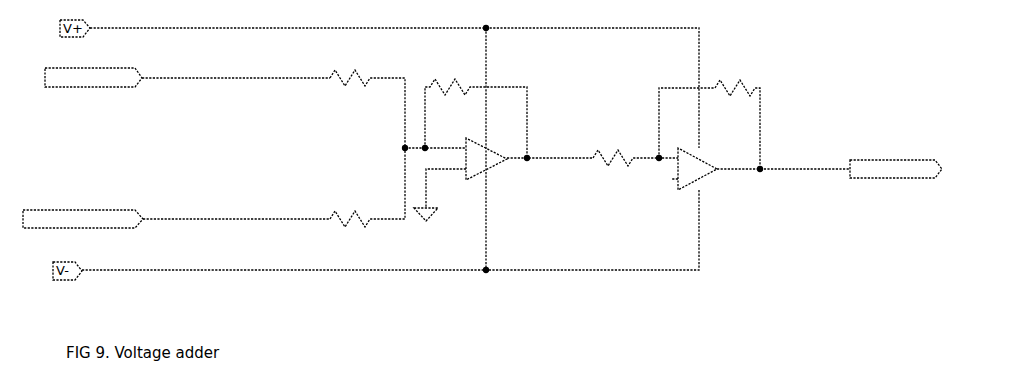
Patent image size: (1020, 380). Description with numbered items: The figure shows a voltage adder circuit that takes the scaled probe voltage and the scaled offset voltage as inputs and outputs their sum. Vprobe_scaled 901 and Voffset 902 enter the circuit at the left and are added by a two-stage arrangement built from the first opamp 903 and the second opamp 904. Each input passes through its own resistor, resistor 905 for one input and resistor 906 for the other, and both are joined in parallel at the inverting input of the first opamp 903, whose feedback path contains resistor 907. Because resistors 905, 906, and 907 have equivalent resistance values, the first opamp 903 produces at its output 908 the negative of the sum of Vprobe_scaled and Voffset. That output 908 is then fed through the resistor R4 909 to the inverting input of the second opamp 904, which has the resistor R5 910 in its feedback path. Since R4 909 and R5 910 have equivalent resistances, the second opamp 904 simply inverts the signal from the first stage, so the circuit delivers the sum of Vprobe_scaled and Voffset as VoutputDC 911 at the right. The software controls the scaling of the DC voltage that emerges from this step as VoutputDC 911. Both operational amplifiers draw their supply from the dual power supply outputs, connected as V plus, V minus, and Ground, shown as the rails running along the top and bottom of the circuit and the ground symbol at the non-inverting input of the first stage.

The Vprobe_scaled 901 is at (94, 209).
The Voffset 902 is at (93, 68).
The opamp 1 903 is at (498, 146).
The opamp 2 904 is at (704, 156).
The resistor 905 is at (353, 76).
The resistor 906 is at (349, 222).
The resistor 907 is at (453, 77).
The output 908 is at (538, 157).
The R4 909 is at (615, 155).
The R5 910 is at (737, 82).
The VoutputDC 911 is at (903, 157).